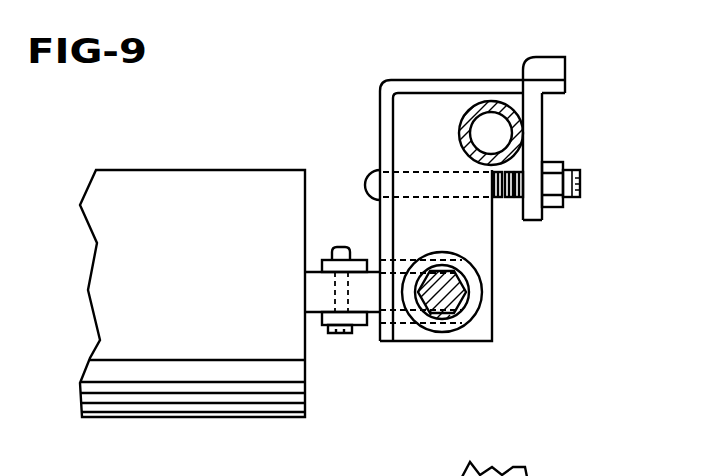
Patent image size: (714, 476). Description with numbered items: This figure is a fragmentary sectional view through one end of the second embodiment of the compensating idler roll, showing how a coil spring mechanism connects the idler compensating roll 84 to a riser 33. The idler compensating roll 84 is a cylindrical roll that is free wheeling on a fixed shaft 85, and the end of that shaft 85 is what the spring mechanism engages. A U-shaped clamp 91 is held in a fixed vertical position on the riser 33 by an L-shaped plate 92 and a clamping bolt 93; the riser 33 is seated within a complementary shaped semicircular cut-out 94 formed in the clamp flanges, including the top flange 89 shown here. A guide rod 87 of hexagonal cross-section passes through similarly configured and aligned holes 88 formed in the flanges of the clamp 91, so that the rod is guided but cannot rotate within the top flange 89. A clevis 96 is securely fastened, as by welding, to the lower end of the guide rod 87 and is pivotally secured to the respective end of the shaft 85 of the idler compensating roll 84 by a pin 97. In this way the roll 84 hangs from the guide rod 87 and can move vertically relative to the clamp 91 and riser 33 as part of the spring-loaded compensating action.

The riser 33 is at (477, 101).
The idler compensating roll 84 is at (208, 277).
The shaft 85 is at (320, 298).
The guide rod 87 is at (460, 280).
The holes 88 is at (463, 292).
The top flange 89 is at (483, 330).
The U-shaped clamp 91 is at (381, 69).
The L-shaped plate 92 is at (535, 122).
The clamping bolt 93 is at (497, 197).
The semicircular cut-out 94 is at (463, 140).
The clevis 96 is at (368, 328).
The pin 97 is at (340, 333).